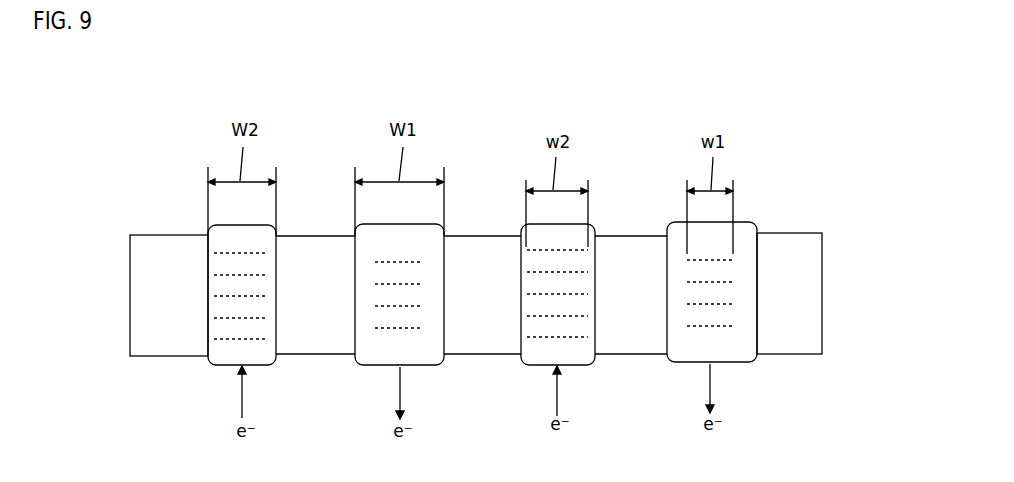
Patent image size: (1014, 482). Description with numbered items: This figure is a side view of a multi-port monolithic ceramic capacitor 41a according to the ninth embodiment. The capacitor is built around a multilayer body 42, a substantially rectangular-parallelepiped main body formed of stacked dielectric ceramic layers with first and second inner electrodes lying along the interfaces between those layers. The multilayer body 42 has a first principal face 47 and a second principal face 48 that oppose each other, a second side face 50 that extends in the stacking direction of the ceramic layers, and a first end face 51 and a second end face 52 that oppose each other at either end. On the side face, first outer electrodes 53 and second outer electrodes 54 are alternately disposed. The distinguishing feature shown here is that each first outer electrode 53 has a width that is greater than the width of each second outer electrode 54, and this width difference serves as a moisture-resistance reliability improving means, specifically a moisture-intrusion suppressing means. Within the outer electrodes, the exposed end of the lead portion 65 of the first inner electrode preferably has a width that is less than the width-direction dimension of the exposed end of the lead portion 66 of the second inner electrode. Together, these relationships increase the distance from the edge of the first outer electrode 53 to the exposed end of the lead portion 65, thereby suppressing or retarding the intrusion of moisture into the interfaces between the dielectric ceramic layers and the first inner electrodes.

The monolithic ceramic capacitor 41a is at (500, 104).
The multilayer body 42 is at (790, 230).
The first principal face 47 is at (476, 236).
The second principal face 48 is at (637, 354).
The second side face 50 is at (313, 265).
The first end face 51 is at (130, 297).
The second end face 52 is at (822, 303).
The first outer electrode 53 is at (358, 364).
The second outer electrode 54 is at (212, 364).
The lead portion of the first inner electrode 65 is at (418, 331).
The lead portion of the second inner electrode 66 is at (263, 341).